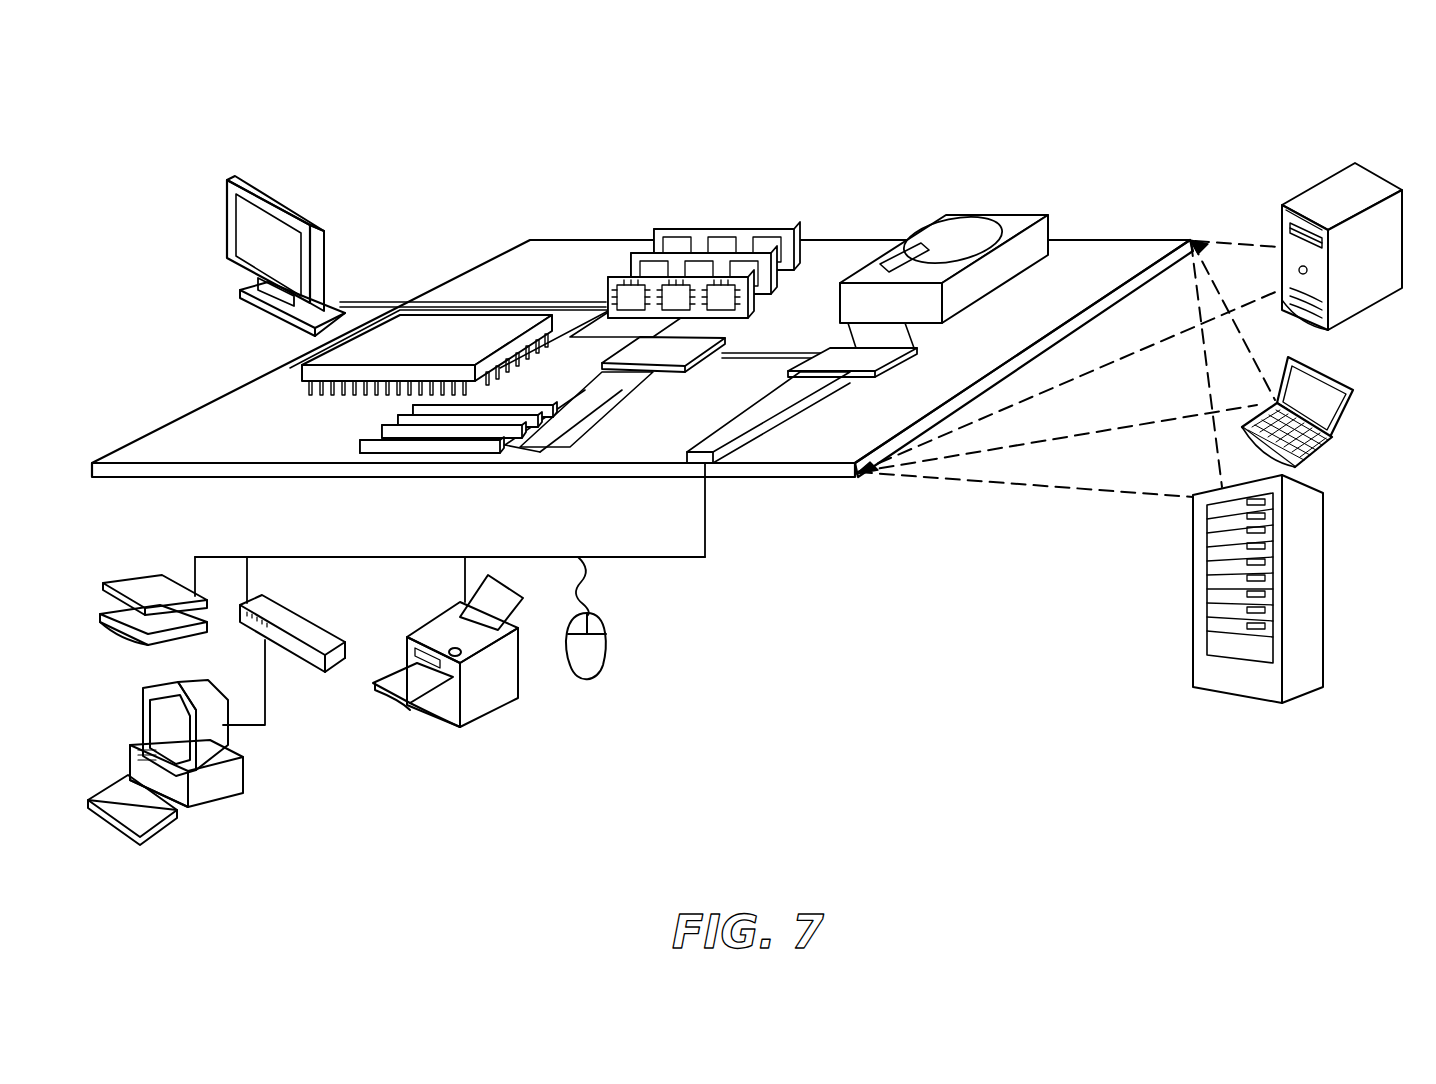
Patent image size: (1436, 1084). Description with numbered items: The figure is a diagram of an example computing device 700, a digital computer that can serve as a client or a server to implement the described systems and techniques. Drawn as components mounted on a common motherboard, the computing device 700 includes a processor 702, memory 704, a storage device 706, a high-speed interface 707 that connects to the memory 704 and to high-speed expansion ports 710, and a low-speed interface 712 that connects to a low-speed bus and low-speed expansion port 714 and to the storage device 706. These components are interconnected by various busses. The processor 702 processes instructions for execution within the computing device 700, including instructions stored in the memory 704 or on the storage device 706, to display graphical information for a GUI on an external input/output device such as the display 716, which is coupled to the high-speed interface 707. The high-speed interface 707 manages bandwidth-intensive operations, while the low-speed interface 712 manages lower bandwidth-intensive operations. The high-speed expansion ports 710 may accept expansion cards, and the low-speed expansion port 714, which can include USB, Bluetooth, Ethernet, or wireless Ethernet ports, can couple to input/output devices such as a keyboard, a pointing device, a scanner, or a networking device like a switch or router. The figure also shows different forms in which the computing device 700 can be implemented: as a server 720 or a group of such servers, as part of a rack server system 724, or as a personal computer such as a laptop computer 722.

The computing device 700 is at (387, 93).
The processor 702 is at (306, 370).
The memory 704 is at (668, 232).
The storage device 706 is at (928, 222).
The high-speed interface 707 is at (638, 350).
The high-speed expansion ports 710 is at (388, 434).
The low-speed interface 712 is at (833, 355).
The low-speed expansion port 714 is at (718, 464).
The display 716 is at (230, 178).
The server 720 is at (1280, 226).
The laptop computer 722 is at (1356, 388).
The rack server system 724 is at (1180, 605).